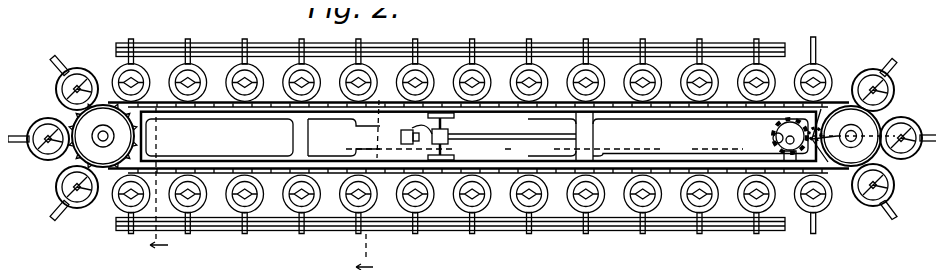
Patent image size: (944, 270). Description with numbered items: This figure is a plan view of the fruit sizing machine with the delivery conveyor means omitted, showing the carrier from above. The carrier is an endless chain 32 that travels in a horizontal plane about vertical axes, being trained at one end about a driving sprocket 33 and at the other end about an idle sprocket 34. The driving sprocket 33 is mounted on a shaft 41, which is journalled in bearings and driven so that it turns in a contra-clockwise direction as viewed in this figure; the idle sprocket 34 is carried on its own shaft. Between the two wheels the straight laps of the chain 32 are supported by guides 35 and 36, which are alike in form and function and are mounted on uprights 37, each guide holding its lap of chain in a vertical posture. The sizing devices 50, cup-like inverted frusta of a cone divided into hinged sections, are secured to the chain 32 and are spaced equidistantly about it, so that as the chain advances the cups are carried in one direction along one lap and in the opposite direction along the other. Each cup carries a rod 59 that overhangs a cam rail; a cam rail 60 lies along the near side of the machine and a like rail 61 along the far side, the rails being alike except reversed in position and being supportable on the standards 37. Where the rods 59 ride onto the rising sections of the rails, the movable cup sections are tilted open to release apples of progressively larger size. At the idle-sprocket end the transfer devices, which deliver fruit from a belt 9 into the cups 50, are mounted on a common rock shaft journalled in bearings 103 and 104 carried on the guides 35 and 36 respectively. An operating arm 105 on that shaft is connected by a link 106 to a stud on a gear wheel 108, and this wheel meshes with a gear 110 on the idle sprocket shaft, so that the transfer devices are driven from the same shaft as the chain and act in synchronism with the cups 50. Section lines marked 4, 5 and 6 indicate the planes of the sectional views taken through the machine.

The cam rail 61 is at (432, 36).
The cam rail 60 is at (399, 222).
The rod 59 is at (578, 35).
The sizing device 50 is at (236, 56).
The chain 32 is at (873, 103).
The guide 36 is at (713, 99).
The upright 37 is at (589, 116).
The guide 35 is at (164, 157).
The shaft 41 is at (91, 126).
The driving sprocket 33 is at (78, 139).
The idle sprocket 34 is at (855, 146).
The gear wheel 108 is at (764, 130).
The gear 110 is at (830, 96).
The bearing 104 is at (445, 109).
The bearing 103 is at (448, 152).
The operating arm 105 is at (406, 130).
The link 106 is at (512, 144).
The section line 5- 5 is at (158, 186).
The section line 4- 4 is at (367, 185).
The section line 6 is at (377, 149).
The belt 9 is at (660, 151).